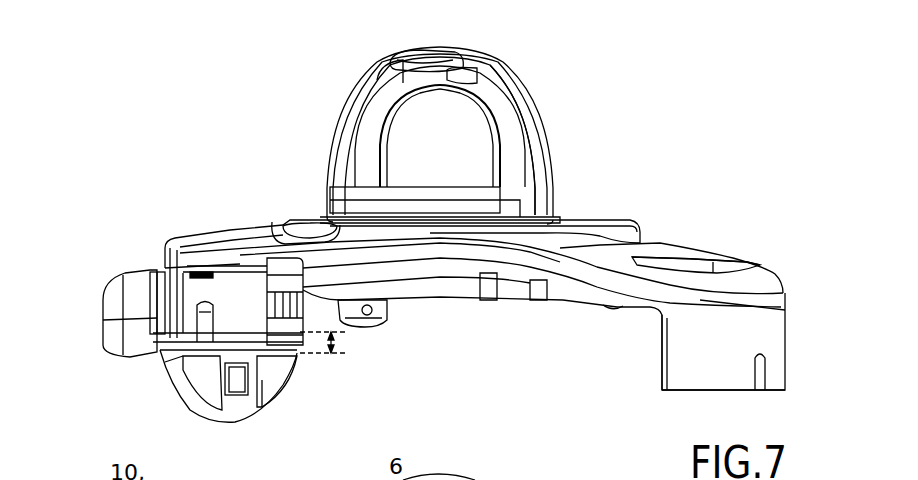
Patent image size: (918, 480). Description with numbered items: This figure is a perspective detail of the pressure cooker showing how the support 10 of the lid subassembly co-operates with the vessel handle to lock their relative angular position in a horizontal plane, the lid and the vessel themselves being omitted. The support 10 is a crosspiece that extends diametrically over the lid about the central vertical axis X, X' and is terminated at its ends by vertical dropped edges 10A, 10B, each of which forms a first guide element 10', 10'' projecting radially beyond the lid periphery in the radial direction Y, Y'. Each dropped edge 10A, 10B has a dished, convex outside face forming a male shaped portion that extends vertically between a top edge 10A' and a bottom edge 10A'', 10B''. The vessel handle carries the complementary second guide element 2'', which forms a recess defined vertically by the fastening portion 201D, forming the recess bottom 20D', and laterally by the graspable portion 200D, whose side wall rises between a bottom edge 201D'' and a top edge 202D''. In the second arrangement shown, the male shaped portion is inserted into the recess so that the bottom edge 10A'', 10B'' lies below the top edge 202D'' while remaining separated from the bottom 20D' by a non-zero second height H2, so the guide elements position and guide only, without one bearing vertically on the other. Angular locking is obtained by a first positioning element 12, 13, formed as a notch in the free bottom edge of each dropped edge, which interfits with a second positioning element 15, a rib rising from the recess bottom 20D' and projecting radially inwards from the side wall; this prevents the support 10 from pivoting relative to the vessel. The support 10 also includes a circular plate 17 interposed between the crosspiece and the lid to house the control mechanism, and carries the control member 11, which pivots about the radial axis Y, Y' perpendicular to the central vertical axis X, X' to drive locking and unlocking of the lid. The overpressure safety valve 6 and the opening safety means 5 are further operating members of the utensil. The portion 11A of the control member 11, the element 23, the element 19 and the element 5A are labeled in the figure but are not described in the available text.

The support 10 is at (510, 305).
The vertical dropped edge 10A is at (778, 320).
The top edge 10A' is at (721, 253).
The bottom edge 10A'' is at (723, 410).
The first guide element 10' is at (659, 374).
The first positioning element 12 is at (787, 373).
The control member 11 is at (507, 95).
The arch rail 11A is at (533, 165).
The bracket 23 is at (343, 205).
The graspable portion 200D is at (120, 307).
The vertical dropped edge 10B is at (129, 292).
The top edge of side wall 202D'' is at (162, 235).
The first positioning element 13 is at (185, 273).
The second guide element 2'' is at (161, 342).
The first guide element 10'' is at (290, 326).
The bottom edge 10B'' is at (246, 371).
The fastening portion 201D is at (202, 392).
The bottom edge of side wall 201D'' is at (211, 417).
The bottom of recess 20D' is at (141, 382).
The second positioning element 15 is at (240, 380).
The second height H2 is at (331, 357).
The overpressure safety valve 6 is at (380, 320).
The plate 17 is at (453, 283).
The central vertical axis X is at (433, 375).
The central vertical axis X' is at (446, 97).
The radial axis of pivoting Y is at (326, 193).
The radial axis of pivoting Y' is at (575, 196).
The element 19 is at (164, 470).
The opening safety means 5 is at (255, 470).
The element 5A is at (339, 472).